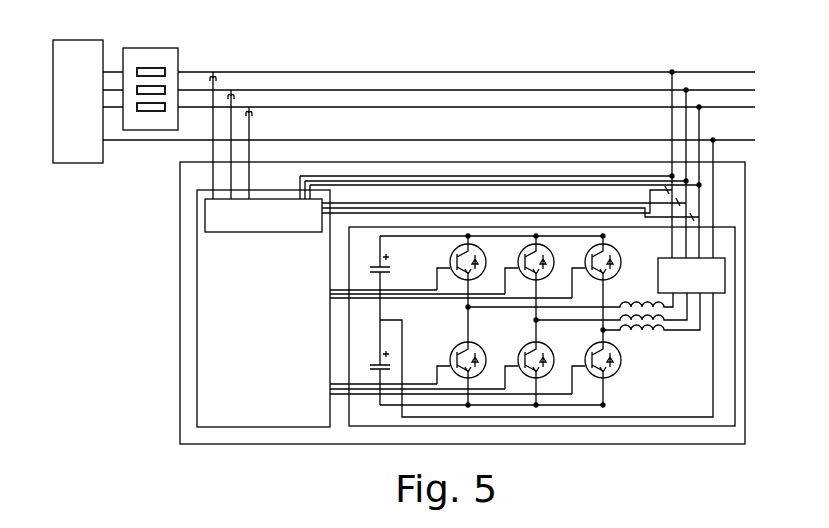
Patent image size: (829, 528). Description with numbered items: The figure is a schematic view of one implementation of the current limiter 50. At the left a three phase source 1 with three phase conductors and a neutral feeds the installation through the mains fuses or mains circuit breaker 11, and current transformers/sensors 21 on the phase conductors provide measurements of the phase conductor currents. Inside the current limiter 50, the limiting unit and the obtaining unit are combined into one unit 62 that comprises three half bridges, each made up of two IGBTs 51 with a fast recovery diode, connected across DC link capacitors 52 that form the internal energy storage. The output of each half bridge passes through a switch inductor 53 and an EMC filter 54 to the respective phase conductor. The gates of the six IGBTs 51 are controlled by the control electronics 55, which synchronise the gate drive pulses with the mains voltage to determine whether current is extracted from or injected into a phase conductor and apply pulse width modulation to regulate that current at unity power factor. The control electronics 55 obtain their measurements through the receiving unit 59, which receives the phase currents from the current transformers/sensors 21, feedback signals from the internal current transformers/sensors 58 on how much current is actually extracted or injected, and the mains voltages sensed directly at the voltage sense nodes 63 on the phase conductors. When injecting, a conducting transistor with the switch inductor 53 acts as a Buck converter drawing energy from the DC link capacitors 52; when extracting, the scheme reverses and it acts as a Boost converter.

The three phase source 1 is at (86, 35).
The mains fuses or mains circuit breaker 11 is at (178, 49).
The current transformers/sensors 21 is at (233, 73).
The current limiter 50 is at (180, 300).
The IGBT 51 is at (529, 320).
The DC link capacitor 52 is at (486, 320).
The switch inductors 53 is at (584, 331).
The EMC filter 54 is at (552, 337).
The control electronics 55 is at (384, 308).
The current transformers/sensors 58 is at (703, 221).
The receiving unit 59 is at (263, 204).
The combined limiting and obtaining unit 62 is at (737, 413).
The voltage sense node 63 is at (672, 176).